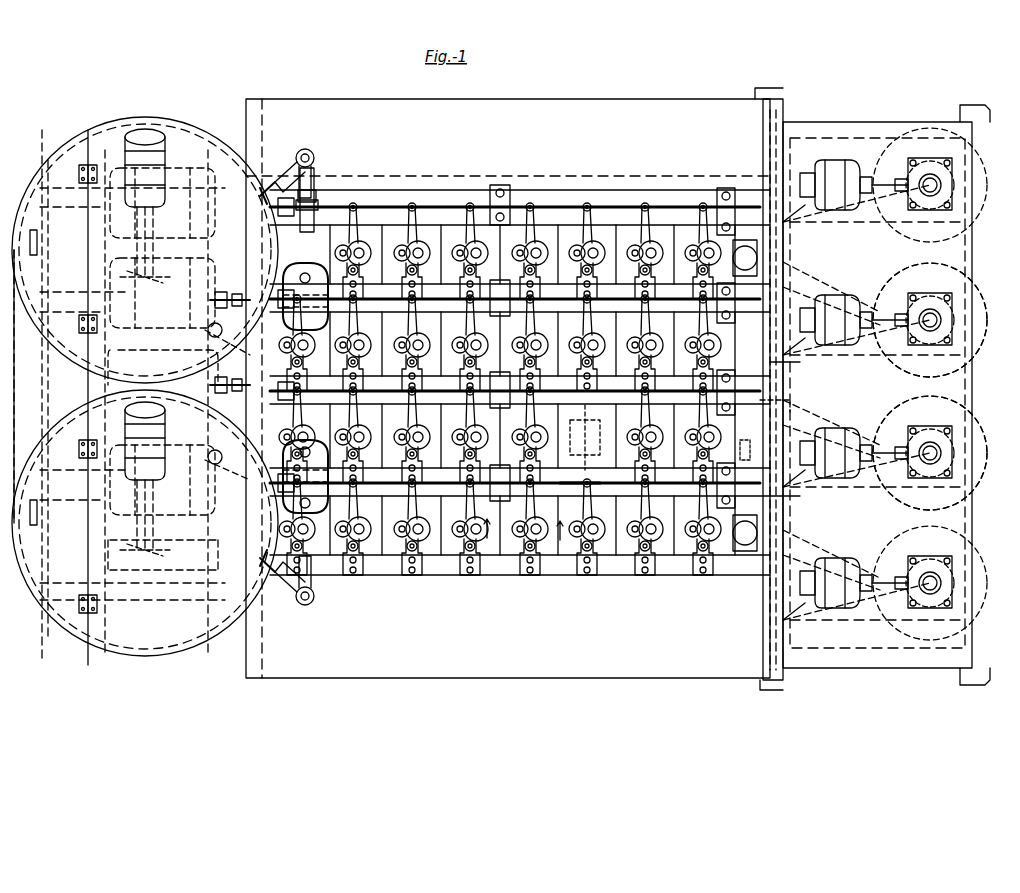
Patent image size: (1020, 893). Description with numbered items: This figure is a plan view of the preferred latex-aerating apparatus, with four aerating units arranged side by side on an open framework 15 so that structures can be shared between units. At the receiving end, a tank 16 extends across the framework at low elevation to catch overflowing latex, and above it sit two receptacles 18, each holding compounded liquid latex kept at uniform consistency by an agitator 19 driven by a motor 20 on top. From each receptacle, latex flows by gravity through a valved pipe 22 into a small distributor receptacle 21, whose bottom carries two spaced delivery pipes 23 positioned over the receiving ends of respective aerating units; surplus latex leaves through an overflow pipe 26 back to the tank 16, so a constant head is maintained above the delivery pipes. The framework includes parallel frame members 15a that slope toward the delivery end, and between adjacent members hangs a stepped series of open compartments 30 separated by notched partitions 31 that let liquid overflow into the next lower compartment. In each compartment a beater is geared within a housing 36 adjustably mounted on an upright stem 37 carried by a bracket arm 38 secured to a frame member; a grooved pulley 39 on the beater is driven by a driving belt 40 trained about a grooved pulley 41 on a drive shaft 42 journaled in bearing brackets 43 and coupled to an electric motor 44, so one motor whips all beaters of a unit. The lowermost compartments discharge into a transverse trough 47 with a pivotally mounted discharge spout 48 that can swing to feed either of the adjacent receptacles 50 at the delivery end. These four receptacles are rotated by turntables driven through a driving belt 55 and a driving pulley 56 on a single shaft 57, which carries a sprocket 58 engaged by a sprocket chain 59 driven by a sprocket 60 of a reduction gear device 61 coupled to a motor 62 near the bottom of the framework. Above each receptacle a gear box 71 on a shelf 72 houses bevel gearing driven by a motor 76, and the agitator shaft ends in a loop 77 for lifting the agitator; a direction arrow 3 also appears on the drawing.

The direction arrow 3 is at (525, 535).
The open framework 15 is at (235, 595).
The frame members 15a is at (695, 200).
The tank 16 is at (50, 398).
The receptacles 18 is at (100, 128).
The agitator 19 is at (150, 270).
The motor 20 is at (150, 142).
The distributor receptacles 21 is at (318, 218).
The valved pipe 22 is at (308, 150).
The delivery pipes 23 is at (303, 419).
The overflow pipe 26 is at (225, 292).
The compartments 30 is at (405, 230).
The partitions 31 is at (455, 225).
The housing 36 is at (423, 414).
The upright stem 37 is at (466, 275).
The bracket arm 38 is at (356, 272).
The grooved pulley 39 is at (540, 258).
The driving belt 40 is at (345, 225).
The grooved pulley 41 is at (647, 200).
The drive shaft 42 is at (428, 200).
The bearing brackets 43 is at (505, 190).
The electric motor 44 is at (185, 185).
The trough 47 is at (791, 434).
The discharge spout 48 is at (815, 275).
The receptacles 50 is at (905, 250).
The driving belt 55 is at (850, 222).
The driving pulley 56 is at (740, 638).
The shaft 57 is at (773, 99).
The sprocket 58 is at (787, 399).
The sprocket chain 59 is at (729, 450).
The sprocket 60 is at (515, 387).
The reduction gear device 61 is at (515, 478).
The motor 62 is at (540, 486).
The gear box 71 is at (925, 158).
The shelf 72 is at (838, 655).
The motor 76 is at (830, 160).
The loop 77 is at (920, 185).